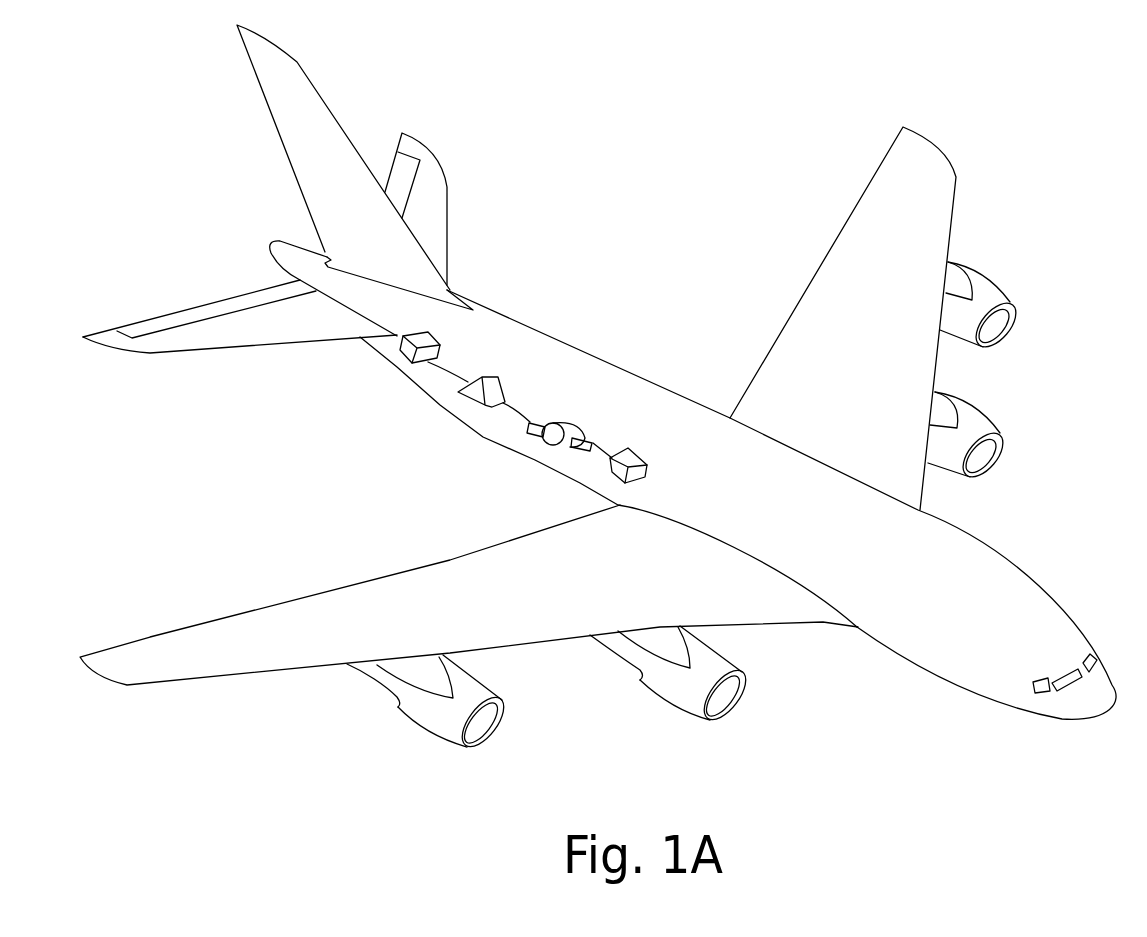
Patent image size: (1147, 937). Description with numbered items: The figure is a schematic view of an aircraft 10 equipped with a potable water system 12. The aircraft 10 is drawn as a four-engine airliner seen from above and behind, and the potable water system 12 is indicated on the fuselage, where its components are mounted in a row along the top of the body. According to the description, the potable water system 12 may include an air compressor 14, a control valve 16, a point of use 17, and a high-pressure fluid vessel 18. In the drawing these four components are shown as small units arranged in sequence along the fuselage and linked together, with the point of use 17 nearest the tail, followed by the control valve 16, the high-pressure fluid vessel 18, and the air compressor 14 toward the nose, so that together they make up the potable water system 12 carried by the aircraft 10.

The aircraft 10 is at (604, 389).
The potable water system 12 is at (532, 377).
The air compressor 14 is at (610, 470).
The control valve 16 is at (468, 392).
The point of use 17 is at (405, 352).
The high-pressure fluid vessel 18 is at (545, 440).